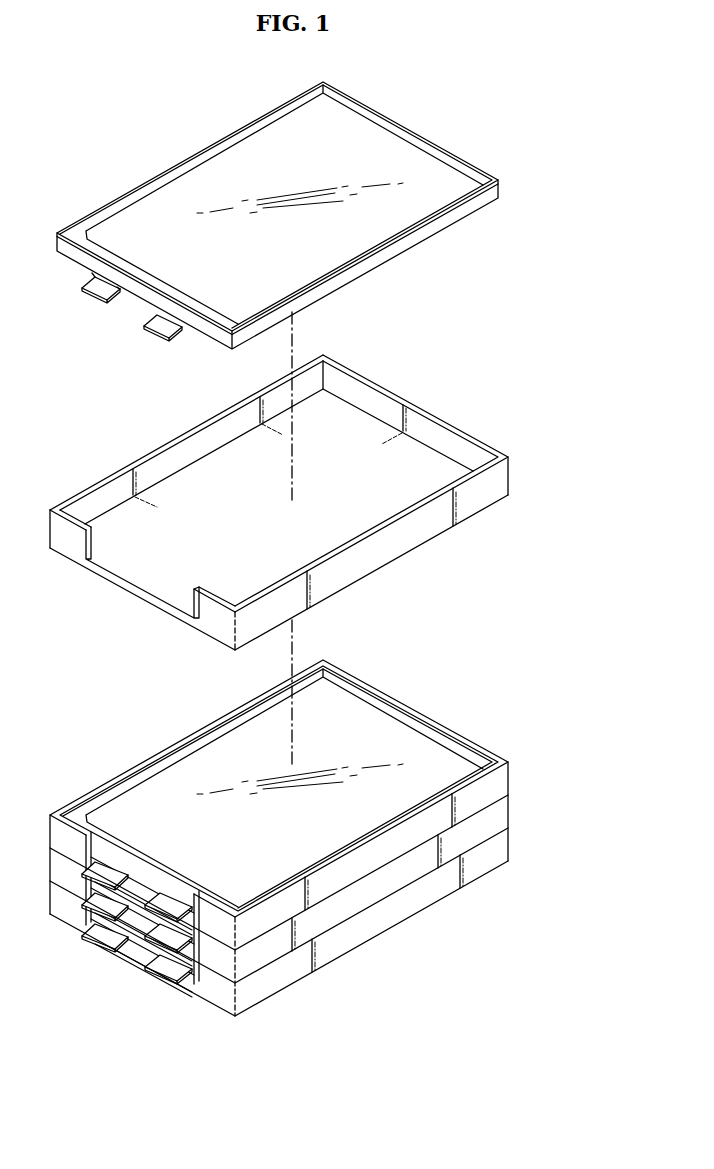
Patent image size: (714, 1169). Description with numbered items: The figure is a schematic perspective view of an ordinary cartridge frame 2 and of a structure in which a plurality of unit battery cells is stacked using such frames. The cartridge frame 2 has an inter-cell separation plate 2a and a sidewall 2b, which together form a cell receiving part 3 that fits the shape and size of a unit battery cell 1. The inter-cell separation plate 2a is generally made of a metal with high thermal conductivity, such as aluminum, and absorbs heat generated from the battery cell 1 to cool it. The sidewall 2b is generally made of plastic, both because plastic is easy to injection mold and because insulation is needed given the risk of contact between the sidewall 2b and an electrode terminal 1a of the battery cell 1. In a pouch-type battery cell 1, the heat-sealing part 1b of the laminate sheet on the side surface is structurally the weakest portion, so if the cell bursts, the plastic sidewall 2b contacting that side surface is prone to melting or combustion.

The unit battery cell 1 is at (390, 147).
The electrode terminal 1a is at (158, 328).
The heat-sealing part 1b is at (70, 235).
The cartridge frame 2 is at (428, 393).
The inter-cell separation plate 2a is at (147, 585).
The sidewall 2b is at (193, 447).
The cell receiving part 3 is at (338, 484).